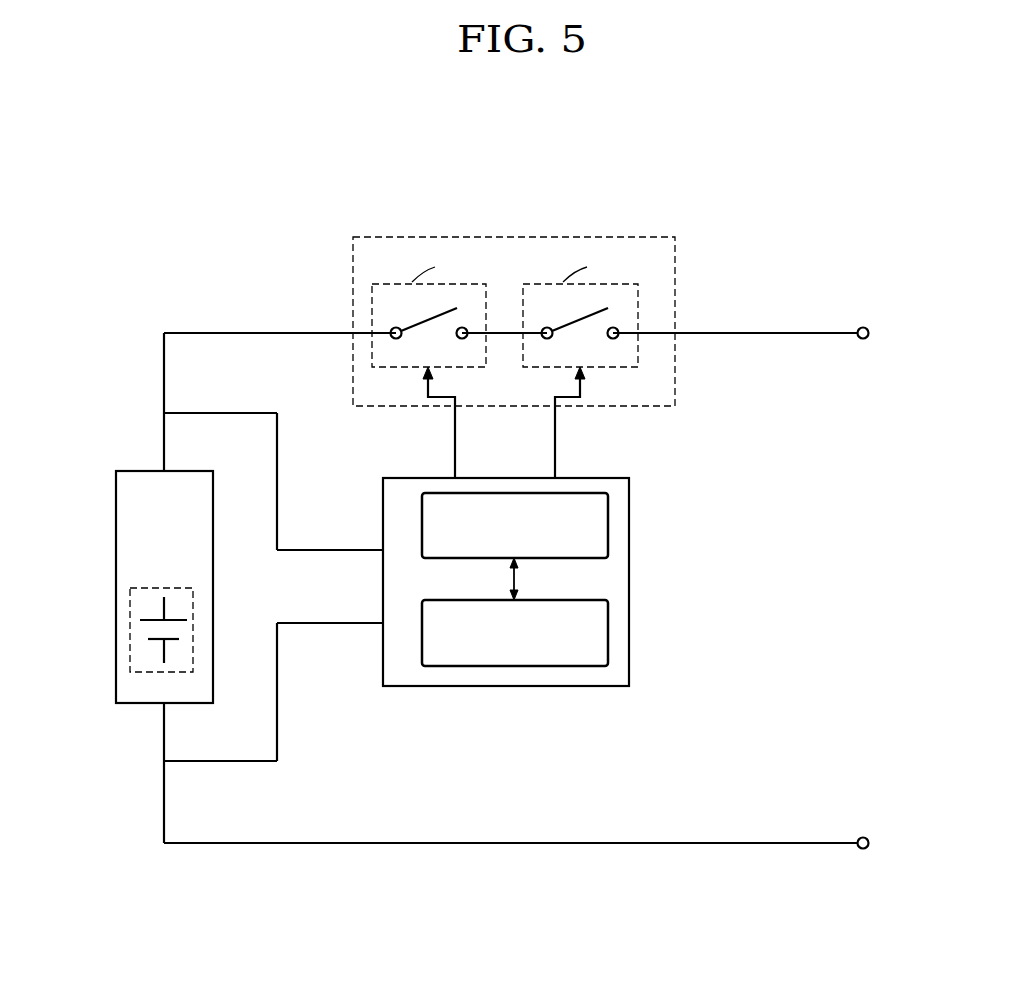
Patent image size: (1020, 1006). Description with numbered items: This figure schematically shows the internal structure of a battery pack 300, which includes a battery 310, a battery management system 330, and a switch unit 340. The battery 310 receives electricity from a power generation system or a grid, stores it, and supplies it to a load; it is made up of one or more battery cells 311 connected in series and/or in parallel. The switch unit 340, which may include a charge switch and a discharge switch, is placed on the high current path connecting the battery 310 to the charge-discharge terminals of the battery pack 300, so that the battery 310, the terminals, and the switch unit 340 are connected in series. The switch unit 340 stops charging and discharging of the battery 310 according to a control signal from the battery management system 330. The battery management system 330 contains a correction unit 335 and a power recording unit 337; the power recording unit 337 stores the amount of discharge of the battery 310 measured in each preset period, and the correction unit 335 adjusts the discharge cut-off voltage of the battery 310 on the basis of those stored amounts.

The battery pack 300 is at (817, 226).
The battery 310 is at (116, 513).
The battery cell 311 is at (130, 629).
The battery management system 330 is at (505, 686).
The correction unit 335 is at (609, 525).
The power recording unit 337 is at (609, 631).
The switch unit 340 is at (603, 235).